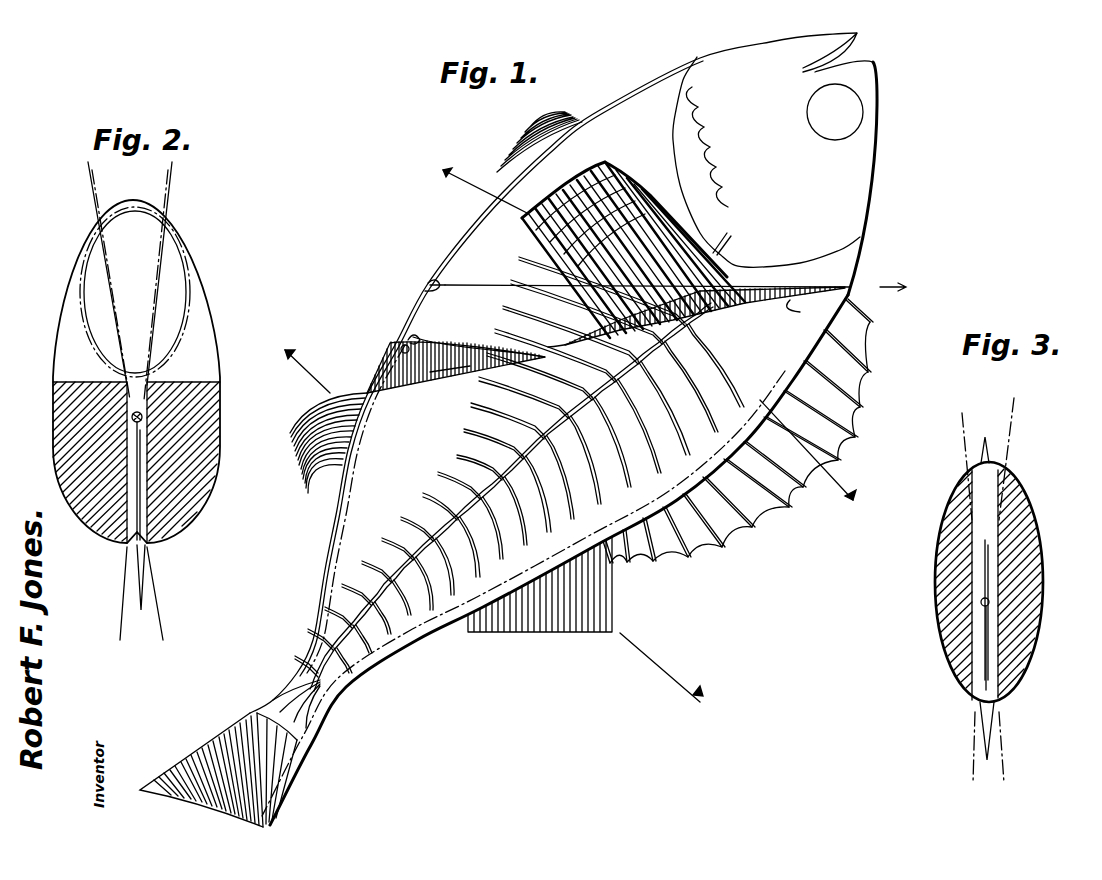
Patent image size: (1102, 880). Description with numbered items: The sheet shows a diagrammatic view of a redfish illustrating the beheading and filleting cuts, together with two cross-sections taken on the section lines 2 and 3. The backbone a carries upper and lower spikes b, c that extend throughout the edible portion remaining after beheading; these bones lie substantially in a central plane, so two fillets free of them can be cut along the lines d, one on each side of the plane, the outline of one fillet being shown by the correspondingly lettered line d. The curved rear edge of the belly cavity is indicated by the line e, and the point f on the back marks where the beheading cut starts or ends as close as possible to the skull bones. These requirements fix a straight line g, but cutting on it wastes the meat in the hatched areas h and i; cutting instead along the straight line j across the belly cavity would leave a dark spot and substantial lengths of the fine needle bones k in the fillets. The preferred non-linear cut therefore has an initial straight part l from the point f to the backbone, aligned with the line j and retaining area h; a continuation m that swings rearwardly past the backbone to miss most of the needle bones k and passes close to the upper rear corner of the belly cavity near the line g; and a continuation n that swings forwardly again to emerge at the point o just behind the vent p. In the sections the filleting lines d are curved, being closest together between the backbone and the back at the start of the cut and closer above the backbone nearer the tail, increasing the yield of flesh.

In FIG. 1, the backbone a is at (480, 433).
In FIG. 2, the backbone a is at (130, 420).
In FIG. 3, the backbone a is at (981, 602).
In FIG. 1, the upper spike b is at (596, 462).
In FIG. 2, the upper spike b is at (137, 452).
In FIG. 3, the upper spike b is at (983, 630).
In FIG. 1, the lower spike c is at (420, 507).
In FIG. 3, the lower spike c is at (983, 583).
In FIG. 1, the filleting cut line d is at (335, 522).
In FIG. 2, the filleting cut line d is at (128, 478).
In FIG. 3, the filleting cut line d is at (977, 562).
In FIG. 1, the rear edge of the belly cavity e is at (478, 348).
In FIG. 2, the rear edge of the belly cavity e is at (160, 238).
In FIG. 1, the point on the back of the fish f is at (852, 287).
In FIG. 1, the straight line g is at (445, 375).
In FIG. 1, the hatched area h is at (748, 291).
In FIG. 1, the hatched area i is at (404, 395).
In FIG. 1, the straight line j is at (428, 282).
In FIG. 1, the needle bones k is at (648, 195).
In FIG. 2, the needle bones k is at (78, 284).
In FIG. 1, the initial part of the cut l is at (820, 280).
In FIG. 1, the continuation of the cut m is at (553, 346).
In FIG. 1, the continuation of the desired line n is at (385, 355).
In FIG. 1, the point o is at (400, 347).
In FIG. 1, the vent p is at (410, 338).
In FIG. 1, the section line 2— 2 is at (656, 329).
In FIG. 1, the section line 3— 3 is at (501, 506).